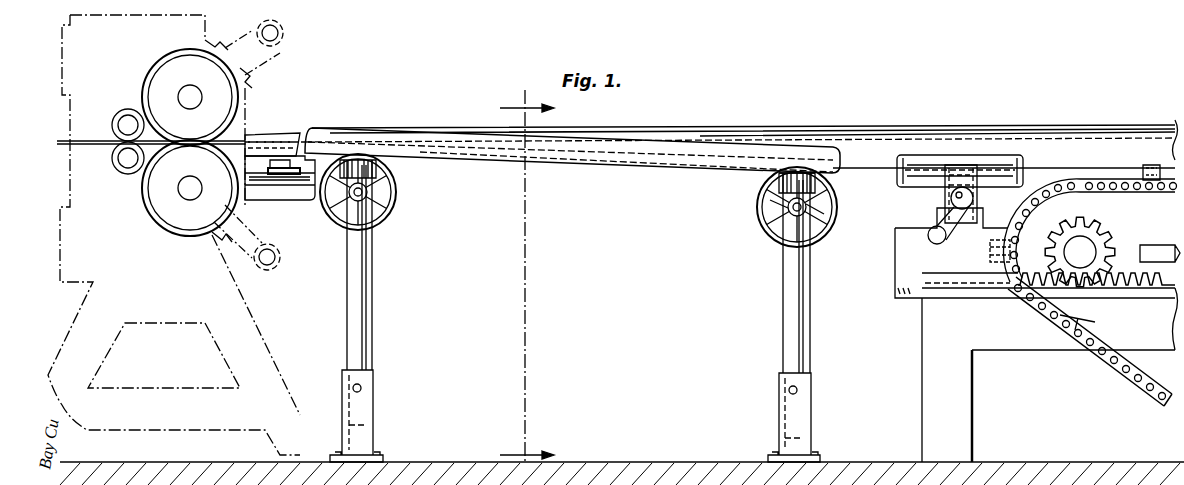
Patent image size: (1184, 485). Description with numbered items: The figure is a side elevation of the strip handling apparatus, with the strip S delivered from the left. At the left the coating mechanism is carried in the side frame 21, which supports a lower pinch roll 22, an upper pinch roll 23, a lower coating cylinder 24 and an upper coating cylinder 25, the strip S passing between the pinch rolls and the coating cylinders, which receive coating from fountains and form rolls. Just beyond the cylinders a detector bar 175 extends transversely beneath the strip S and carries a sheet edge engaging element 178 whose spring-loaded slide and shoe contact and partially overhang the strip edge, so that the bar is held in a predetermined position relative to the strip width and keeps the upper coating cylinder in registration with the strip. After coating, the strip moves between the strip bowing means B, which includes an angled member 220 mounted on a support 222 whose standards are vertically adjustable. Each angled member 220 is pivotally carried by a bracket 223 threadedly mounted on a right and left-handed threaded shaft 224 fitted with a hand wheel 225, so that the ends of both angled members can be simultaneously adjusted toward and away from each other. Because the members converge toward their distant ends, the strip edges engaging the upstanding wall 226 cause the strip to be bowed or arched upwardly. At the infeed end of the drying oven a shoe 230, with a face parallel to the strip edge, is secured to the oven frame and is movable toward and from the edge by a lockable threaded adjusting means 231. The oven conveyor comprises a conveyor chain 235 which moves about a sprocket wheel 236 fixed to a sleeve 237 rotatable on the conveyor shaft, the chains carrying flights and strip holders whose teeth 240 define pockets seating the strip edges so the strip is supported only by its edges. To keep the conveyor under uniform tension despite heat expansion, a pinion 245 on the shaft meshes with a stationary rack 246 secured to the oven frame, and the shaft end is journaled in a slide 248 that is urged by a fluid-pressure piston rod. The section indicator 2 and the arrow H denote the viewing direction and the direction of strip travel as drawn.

The section line 2- 2 is at (527, 263).
The side frame 21 is at (100, 315).
The lower pinch roll 22 is at (118, 172).
The upper pinch roll 23 is at (120, 110).
The lower coating cylinder 24 is at (165, 230).
The upper coating cylinder 25 is at (172, 62).
The detector bar 175 is at (286, 180).
The sheet edge engaging element 178 is at (294, 134).
The angled member 220 is at (505, 158).
The support 222 is at (770, 206).
The bracket 223 is at (776, 183).
The right and left-handed threaded shaft 224 is at (826, 212).
The hand wheel 225 is at (382, 215).
The upstanding wall 226 is at (760, 152).
The shoe 230 is at (1000, 160).
The threaded adjusting means 231 is at (945, 207).
The conveyor chain 235 is at (1125, 382).
The sprocket wheel 236 is at (1072, 345).
The sleeve 237 is at (1068, 256).
The tooth 240 is at (1151, 163).
The pinion 245 is at (1100, 240).
The stationary rack 246 is at (1128, 290).
The slide 248 is at (912, 245).
The strip S is at (93, 143).
The direction of sheet travel H is at (248, 100).
The strip bowing means B is at (590, 168).